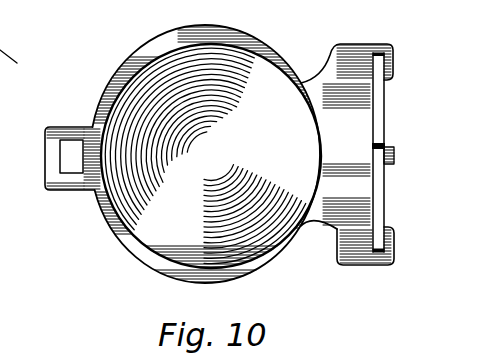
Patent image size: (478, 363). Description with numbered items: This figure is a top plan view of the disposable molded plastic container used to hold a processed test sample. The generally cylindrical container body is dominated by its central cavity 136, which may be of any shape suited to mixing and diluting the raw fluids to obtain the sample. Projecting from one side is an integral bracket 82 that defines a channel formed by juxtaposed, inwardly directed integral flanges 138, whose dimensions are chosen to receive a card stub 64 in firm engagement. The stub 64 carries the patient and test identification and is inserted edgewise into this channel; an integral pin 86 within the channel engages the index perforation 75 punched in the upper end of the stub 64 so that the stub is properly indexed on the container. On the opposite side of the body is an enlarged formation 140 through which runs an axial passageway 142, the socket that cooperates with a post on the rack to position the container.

The central cavity 136 is at (238, 78).
The bracket 82 is at (328, 90).
The inwardly directed flanges 138 is at (392, 73).
The stub 64 is at (385, 113).
The index perforation 75 is at (385, 146).
The integral pin 86 is at (391, 156).
The enlarged formation 140 is at (79, 127).
The axial passageway 142 is at (65, 176).